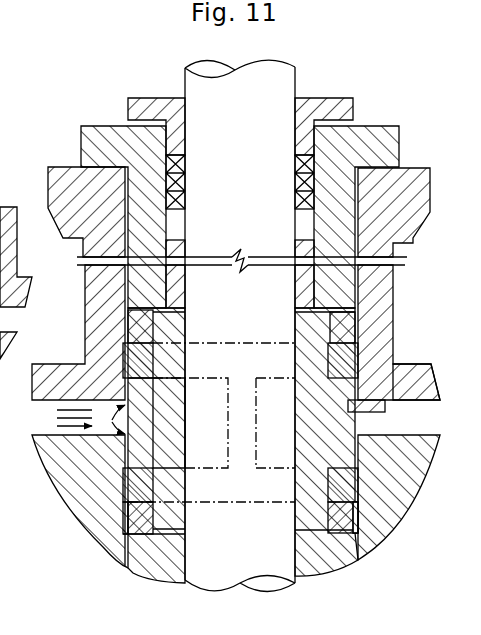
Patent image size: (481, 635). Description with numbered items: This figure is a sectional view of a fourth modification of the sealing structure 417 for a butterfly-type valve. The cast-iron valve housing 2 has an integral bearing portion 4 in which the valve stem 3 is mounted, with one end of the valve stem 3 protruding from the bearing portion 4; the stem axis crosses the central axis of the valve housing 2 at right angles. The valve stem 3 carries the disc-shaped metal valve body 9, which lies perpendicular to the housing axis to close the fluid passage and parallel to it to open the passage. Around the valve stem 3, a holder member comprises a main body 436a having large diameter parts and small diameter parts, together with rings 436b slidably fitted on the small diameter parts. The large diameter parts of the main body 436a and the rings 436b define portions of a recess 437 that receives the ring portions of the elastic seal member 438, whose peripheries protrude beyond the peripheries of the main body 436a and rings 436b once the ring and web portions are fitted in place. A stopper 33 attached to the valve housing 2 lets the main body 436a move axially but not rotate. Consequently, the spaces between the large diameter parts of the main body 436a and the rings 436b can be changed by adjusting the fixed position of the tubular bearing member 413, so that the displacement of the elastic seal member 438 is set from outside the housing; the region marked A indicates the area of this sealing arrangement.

The valve stem 3 is at (292, 85).
The tubular bearing member 413 is at (136, 279).
The recess 437 is at (246, 328).
The bearing portion 4 is at (387, 297).
The valve housing 2 is at (410, 378).
The valve body 9 is at (55, 536).
The sealing structure 417 is at (104, 452).
The elastic seal member 438 is at (132, 488).
The rings 436b is at (140, 530).
The main body 436a is at (183, 513).
The stopper 33 is at (372, 412).
The region A is at (321, 543).